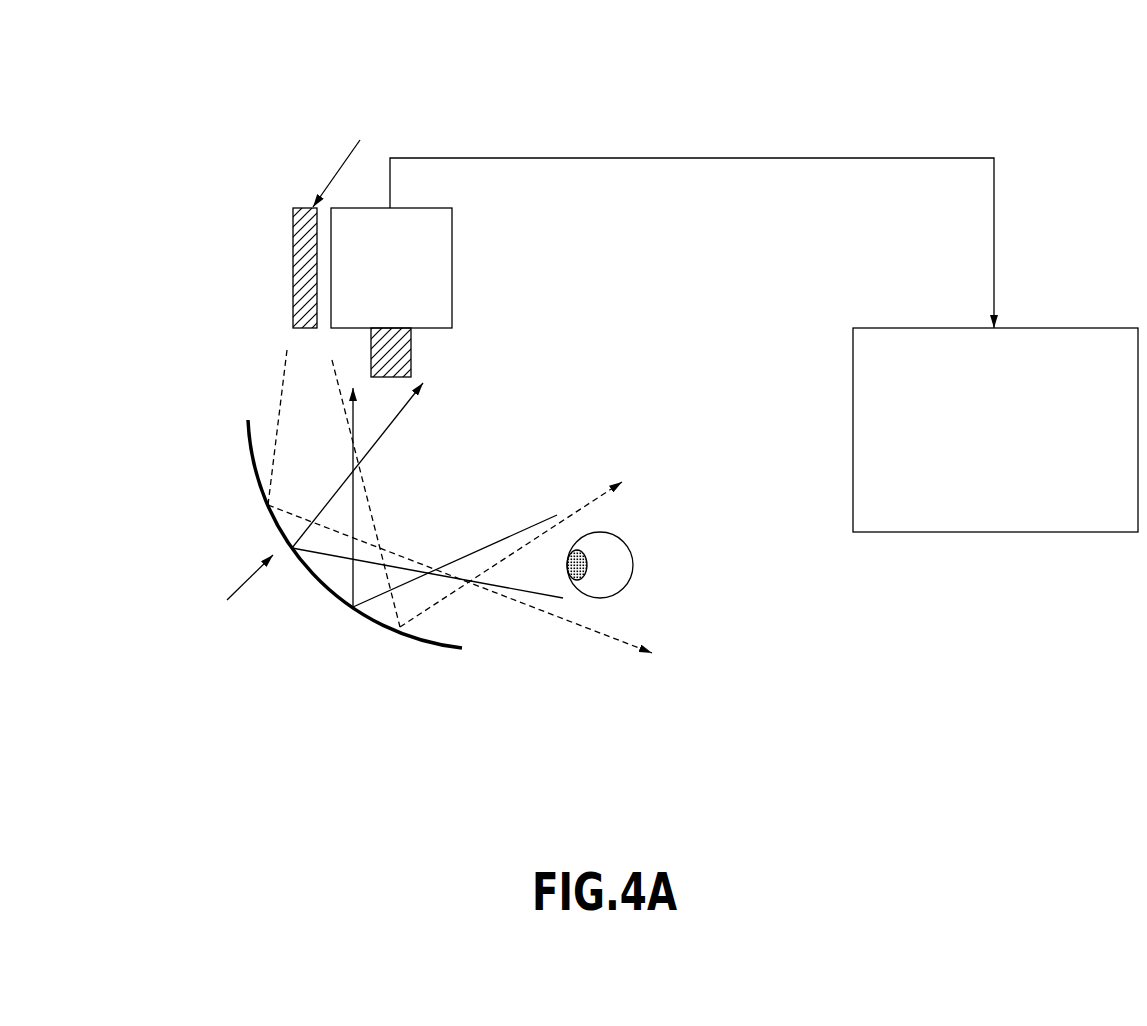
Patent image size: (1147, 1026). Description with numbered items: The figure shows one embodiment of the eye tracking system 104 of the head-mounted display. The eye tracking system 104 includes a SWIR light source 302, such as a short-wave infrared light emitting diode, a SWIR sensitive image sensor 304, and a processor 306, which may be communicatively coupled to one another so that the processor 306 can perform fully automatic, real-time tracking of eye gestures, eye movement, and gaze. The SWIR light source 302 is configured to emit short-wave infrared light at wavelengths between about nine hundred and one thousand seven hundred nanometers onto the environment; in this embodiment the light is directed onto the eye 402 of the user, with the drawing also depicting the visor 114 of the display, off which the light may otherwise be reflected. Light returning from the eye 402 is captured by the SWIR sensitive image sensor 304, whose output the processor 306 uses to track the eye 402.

The eye tracking system 104 is at (183, 63).
The SWIR sensitive image sensor 304 is at (293, 264).
The SWIR light source 302 is at (452, 265).
The processor 306 is at (895, 360).
The visor 114 is at (365, 619).
The eye 402 is at (627, 540).